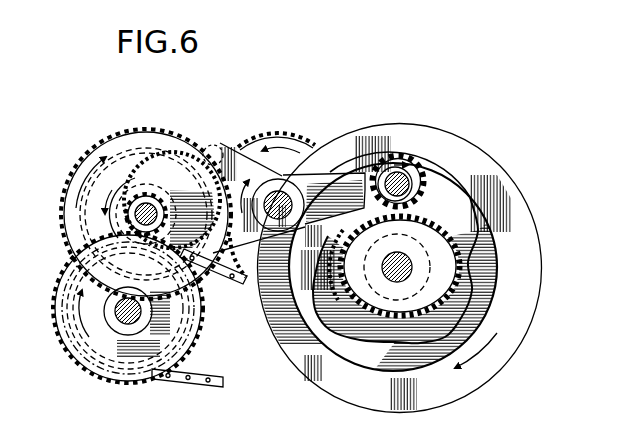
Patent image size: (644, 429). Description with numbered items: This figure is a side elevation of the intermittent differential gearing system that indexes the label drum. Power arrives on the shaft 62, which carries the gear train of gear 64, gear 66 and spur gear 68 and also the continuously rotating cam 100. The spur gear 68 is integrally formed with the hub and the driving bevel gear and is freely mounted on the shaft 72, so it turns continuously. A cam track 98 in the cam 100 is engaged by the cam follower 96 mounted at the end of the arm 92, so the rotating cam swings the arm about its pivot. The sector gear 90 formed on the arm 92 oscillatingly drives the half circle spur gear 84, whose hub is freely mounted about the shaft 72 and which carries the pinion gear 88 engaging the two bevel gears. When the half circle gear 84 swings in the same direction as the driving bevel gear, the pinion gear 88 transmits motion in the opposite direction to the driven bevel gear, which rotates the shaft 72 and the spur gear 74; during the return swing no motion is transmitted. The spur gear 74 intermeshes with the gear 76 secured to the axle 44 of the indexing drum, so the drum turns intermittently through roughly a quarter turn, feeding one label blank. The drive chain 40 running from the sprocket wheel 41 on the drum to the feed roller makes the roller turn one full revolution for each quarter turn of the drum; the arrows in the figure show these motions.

The drive chain 40 is at (190, 388).
The sprocket wheel 41 is at (205, 338).
The axle 44 is at (126, 314).
The shaft 62 is at (391, 270).
The gear 64 is at (340, 285).
The gear 66 is at (285, 129).
The spur gear 68 is at (185, 170).
The shaft 72 is at (138, 216).
The spur gear 74 is at (145, 192).
The gear 76 is at (190, 355).
The half circle spur gear 84 is at (187, 173).
The pinion gear 88 is at (212, 294).
The sector gear 90 is at (214, 144).
The arm 92 is at (272, 190).
The cam follower 96 is at (384, 160).
The cam track 98 is at (485, 318).
The cam 100 is at (541, 287).